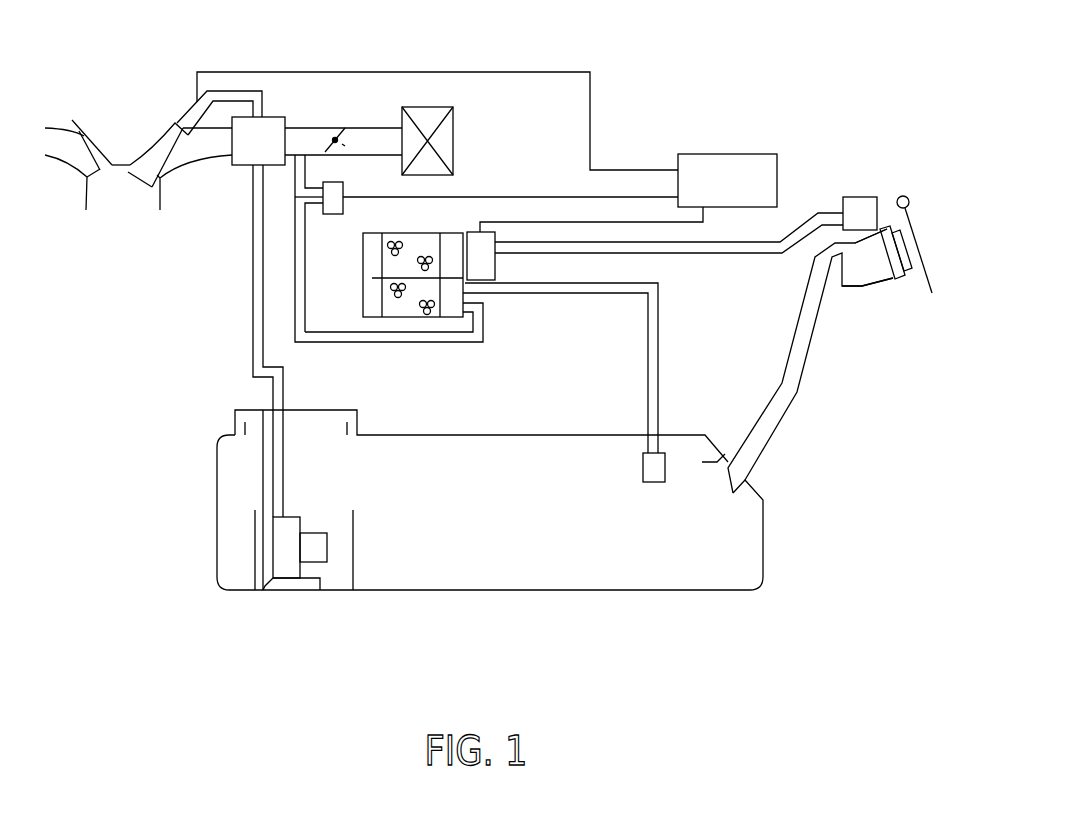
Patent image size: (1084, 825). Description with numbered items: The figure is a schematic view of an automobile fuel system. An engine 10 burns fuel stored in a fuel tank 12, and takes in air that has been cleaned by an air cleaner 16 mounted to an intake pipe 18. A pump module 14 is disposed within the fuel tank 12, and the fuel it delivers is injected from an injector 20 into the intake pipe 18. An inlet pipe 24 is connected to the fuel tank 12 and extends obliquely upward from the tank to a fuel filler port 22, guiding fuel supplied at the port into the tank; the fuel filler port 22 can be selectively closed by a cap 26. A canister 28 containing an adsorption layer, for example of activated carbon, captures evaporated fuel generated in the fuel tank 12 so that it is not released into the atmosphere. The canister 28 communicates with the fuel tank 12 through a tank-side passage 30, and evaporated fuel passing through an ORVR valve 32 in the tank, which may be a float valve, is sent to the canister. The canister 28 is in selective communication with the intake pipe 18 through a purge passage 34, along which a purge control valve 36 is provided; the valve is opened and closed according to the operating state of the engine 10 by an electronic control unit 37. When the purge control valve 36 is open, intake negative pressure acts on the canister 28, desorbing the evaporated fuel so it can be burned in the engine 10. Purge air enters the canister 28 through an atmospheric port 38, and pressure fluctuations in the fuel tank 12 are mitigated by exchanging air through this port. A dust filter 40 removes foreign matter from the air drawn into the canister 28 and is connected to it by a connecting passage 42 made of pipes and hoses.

The engine 10 is at (118, 117).
The fuel tank 12 is at (492, 598).
The pump module 14 is at (247, 543).
The air cleaner 16 is at (428, 100).
The intake pipe 18 is at (200, 166).
The injector 20 is at (175, 100).
The fuel filler port 22 is at (915, 300).
The inlet pipe 24 is at (780, 430).
The cap 26 is at (927, 243).
The canister 28 is at (353, 300).
The tank-side passage 30 is at (648, 357).
The ORVR valve 32 is at (653, 492).
The purge passage 34 is at (295, 327).
The purge control valve 36 is at (333, 214).
The electronic control unit 37 is at (757, 153).
The atmospheric port 38 is at (466, 241).
The dust filter 40 is at (857, 200).
The connecting passage 42 is at (722, 254).